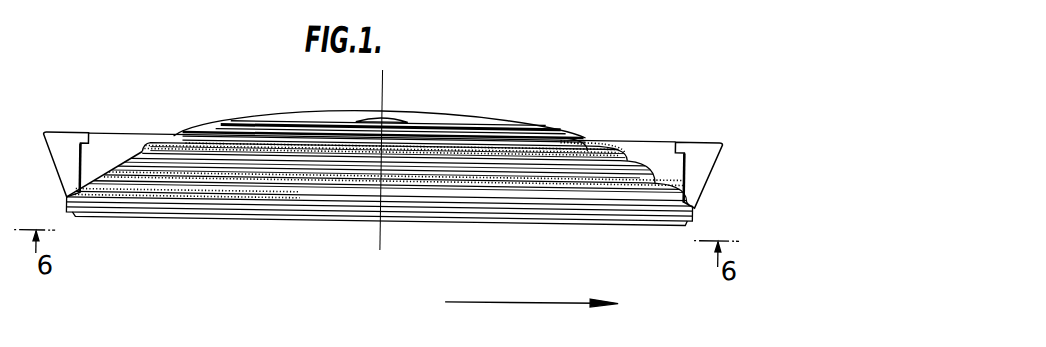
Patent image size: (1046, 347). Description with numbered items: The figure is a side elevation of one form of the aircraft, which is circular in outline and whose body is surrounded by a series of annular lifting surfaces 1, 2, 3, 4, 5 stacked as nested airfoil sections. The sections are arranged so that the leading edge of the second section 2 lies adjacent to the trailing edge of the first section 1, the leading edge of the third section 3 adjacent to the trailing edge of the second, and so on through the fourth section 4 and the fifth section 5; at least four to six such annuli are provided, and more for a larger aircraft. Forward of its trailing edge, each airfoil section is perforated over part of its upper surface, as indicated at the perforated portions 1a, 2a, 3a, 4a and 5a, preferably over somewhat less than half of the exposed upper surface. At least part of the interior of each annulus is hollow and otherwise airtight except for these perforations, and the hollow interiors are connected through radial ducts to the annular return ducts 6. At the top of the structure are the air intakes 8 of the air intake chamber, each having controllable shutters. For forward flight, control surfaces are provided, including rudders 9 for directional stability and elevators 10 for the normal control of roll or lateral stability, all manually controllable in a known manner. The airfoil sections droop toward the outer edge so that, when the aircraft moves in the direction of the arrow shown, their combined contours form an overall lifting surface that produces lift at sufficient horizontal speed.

The annular lifting surface 1 is at (592, 204).
The perforated portion of the first airfoil section 1a is at (617, 199).
The annular lifting surface 2 is at (137, 160).
The perforated portion of the second airfoil section 2a is at (78, 192).
The annular lifting surface 3 is at (173, 143).
The perforated portion of the third airfoil section 3a is at (153, 148).
The annular lifting surface 4 is at (563, 130).
The perforated portion of the fourth airfoil section 4a is at (582, 134).
The annular lifting surface 5 is at (537, 125).
The perforated portion of the fifth airfoil section 5a is at (547, 130).
The annular return ducts 6 is at (472, 122).
The air intakes 8 is at (392, 113).
The rudders 9 is at (63, 145).
The elevators for roll control 10 is at (103, 219).